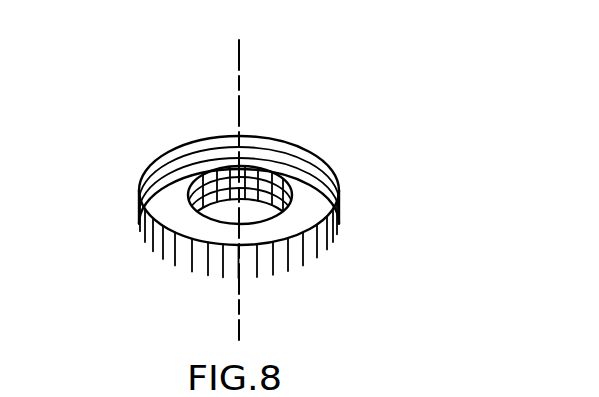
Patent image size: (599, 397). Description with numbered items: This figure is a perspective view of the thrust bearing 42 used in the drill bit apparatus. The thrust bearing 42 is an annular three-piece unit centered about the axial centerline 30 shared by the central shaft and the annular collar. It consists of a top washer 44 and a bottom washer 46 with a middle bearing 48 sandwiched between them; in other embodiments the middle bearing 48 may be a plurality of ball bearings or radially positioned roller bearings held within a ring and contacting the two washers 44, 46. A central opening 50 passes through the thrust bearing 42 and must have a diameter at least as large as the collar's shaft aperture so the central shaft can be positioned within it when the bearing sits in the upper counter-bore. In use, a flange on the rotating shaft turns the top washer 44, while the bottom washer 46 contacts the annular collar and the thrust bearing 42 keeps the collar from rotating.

The axial centerline 30 is at (240, 118).
The thrust bearing 42 is at (162, 138).
The top washer 44 is at (315, 204).
The bottom washer 46 is at (289, 277).
The middle bearing 48 is at (215, 262).
The opening 50 is at (253, 208).